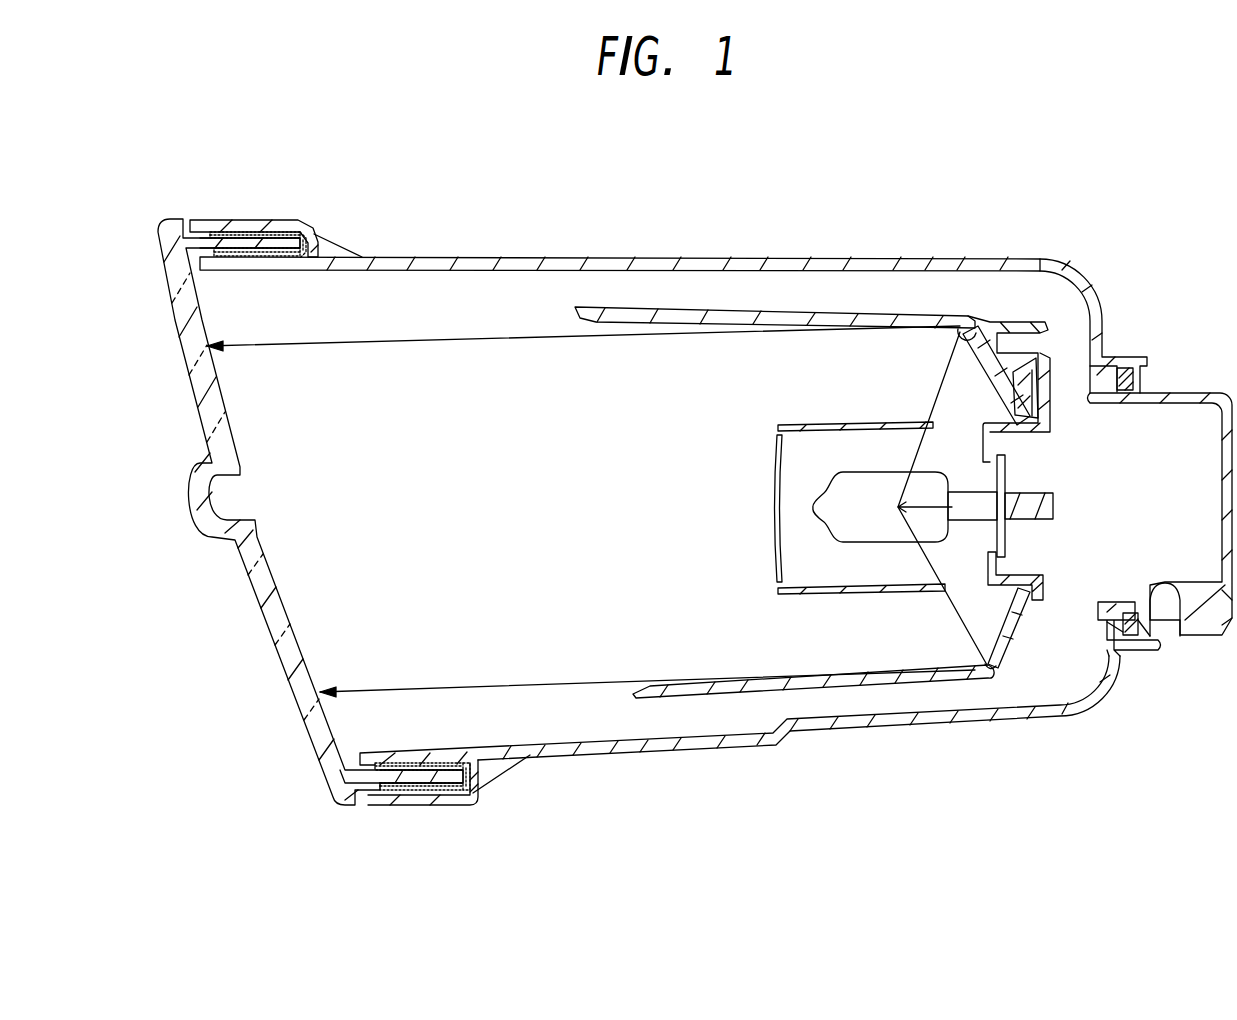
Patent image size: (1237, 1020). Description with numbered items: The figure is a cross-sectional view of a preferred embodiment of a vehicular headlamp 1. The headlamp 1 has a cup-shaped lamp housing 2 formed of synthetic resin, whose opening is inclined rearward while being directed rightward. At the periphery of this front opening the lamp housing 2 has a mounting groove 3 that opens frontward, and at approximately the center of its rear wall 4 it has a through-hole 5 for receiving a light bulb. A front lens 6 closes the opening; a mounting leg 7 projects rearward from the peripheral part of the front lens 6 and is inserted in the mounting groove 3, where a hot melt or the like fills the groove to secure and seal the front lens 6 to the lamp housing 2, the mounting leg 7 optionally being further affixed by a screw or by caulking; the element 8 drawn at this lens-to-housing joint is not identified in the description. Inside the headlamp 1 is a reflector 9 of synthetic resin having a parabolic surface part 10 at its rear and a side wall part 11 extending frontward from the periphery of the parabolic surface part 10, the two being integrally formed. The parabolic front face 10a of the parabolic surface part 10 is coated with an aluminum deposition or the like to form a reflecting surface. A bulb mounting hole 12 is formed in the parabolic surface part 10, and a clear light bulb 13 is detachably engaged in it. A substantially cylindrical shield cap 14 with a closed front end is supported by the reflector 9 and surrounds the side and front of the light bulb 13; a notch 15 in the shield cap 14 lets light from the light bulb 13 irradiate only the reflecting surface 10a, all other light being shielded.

The headlamp 1 is at (750, 201).
The lamp housing 2 is at (613, 257).
The mounting groove 3 is at (313, 230).
The rear wall 4 is at (1098, 310).
The through-hole 5 is at (1098, 400).
The front lens 6 is at (270, 633).
The mounting leg 7 is at (262, 242).
The lens lip 8 is at (278, 262).
The reflector 9 is at (727, 695).
The parabolic surface part 10 is at (953, 668).
The front face (reflecting surface) 10a is at (965, 350).
The side wall part 11 is at (823, 310).
The bulb mounting hole 12 is at (1030, 422).
The light bulb 13 is at (870, 480).
The shield cap 14 is at (772, 562).
The notch 15 is at (940, 420).